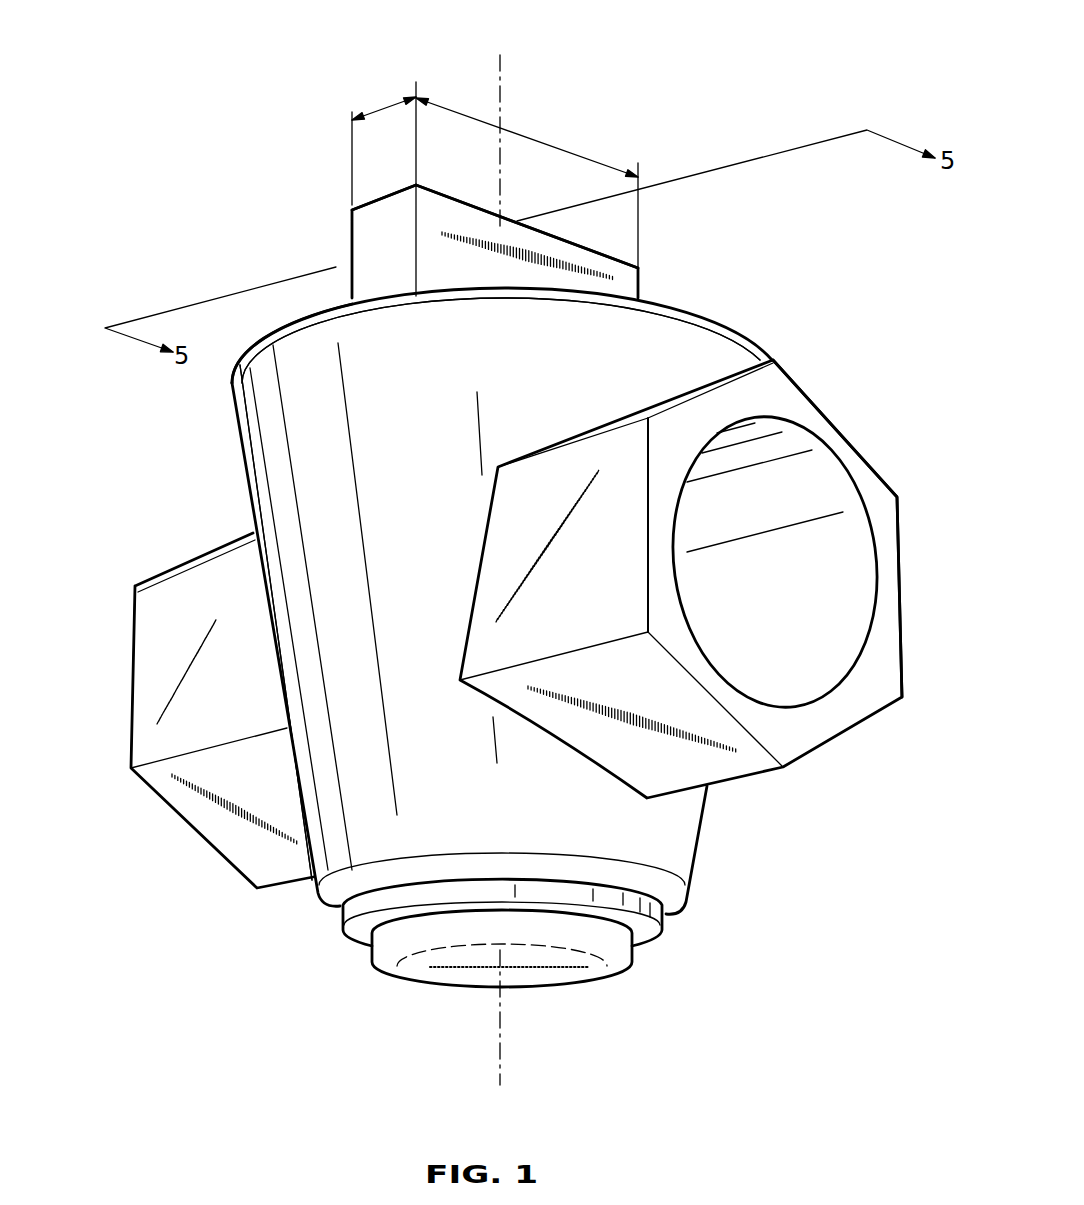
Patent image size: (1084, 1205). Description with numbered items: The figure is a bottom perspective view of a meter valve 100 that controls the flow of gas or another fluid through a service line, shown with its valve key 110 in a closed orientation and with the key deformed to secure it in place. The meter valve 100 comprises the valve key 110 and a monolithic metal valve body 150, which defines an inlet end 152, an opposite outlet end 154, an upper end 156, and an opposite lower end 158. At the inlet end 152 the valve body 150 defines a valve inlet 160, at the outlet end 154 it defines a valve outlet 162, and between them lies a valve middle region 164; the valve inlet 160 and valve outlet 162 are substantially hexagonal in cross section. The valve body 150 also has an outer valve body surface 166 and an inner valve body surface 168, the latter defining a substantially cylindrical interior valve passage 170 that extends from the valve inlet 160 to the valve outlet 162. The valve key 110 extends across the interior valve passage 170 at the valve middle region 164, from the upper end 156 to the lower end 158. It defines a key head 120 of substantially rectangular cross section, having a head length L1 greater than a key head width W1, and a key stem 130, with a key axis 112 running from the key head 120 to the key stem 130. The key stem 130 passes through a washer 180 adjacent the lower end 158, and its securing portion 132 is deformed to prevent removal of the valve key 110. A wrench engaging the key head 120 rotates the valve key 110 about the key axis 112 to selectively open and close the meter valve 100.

The meter valve 100 is at (857, 262).
The valve key 110 is at (328, 250).
The key axis 112 is at (502, 1013).
The key head 120 is at (420, 232).
The key stem 130 is at (583, 962).
The securing portion 132 is at (428, 965).
The valve body 150 is at (738, 837).
The inlet end 152 is at (130, 613).
The outlet end 154 is at (853, 467).
The upper end 156 is at (285, 323).
The lower end 158 is at (320, 893).
The valve inlet 160 is at (130, 690).
The valve outlet 162 is at (876, 545).
The valve middle region 164 is at (310, 458).
The outer valve body surface 166 is at (652, 345).
The inner valve body surface 168 is at (787, 480).
The interior valve passage 170 is at (793, 510).
The washer 180 is at (673, 917).
The key head width W1 is at (405, 97).
The head length L1 is at (543, 140).